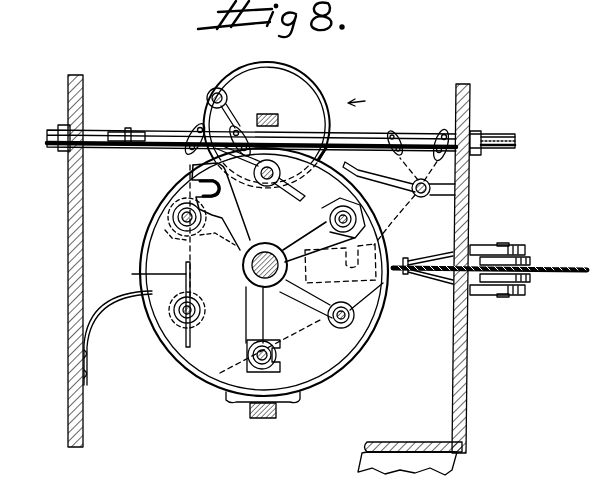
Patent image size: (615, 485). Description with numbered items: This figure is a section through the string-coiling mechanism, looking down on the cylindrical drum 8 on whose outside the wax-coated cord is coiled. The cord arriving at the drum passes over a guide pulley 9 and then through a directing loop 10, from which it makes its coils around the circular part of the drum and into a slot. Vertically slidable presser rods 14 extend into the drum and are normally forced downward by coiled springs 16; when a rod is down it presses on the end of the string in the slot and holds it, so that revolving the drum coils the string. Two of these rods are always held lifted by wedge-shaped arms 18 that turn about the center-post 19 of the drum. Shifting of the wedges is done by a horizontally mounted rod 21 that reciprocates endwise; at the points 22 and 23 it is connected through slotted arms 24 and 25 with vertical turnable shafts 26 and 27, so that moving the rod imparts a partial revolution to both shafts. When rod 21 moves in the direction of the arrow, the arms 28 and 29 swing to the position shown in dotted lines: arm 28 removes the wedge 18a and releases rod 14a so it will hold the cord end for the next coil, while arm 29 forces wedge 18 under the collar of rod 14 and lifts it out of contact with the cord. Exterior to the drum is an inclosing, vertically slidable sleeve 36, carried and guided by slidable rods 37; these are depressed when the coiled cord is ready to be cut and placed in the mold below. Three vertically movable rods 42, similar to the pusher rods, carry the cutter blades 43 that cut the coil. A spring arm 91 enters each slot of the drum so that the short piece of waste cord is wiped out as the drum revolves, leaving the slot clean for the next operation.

The cylindrical drum 8 is at (314, 382).
The guide pulley 9 is at (528, 267).
The directing loop 10 is at (406, 258).
The slidable rods 14 is at (173, 217).
The rod 14a is at (330, 222).
The coiled springs 16 is at (281, 358).
The wedge-shaped arms 18 is at (190, 240).
The wedge 18a is at (318, 262).
The center-post of the drum 19 is at (252, 266).
The horizontally mounted rod 21 is at (150, 130).
The connection point 22 is at (188, 153).
The connection point 23 is at (443, 130).
The slotted arm 24 is at (215, 120).
The slotted arm 25 is at (474, 150).
The vertical turnable shaft 26 is at (209, 93).
The vertical turnable shaft 27 is at (432, 197).
The arm 28 is at (316, 92).
The arm 29 is at (411, 191).
The vertically slidable sleeve 36 is at (183, 361).
The slidable rods 37 is at (262, 418).
The vertically movable rods 42 is at (281, 174).
The cutter blades 43 is at (300, 200).
The spring arm 91 is at (110, 297).